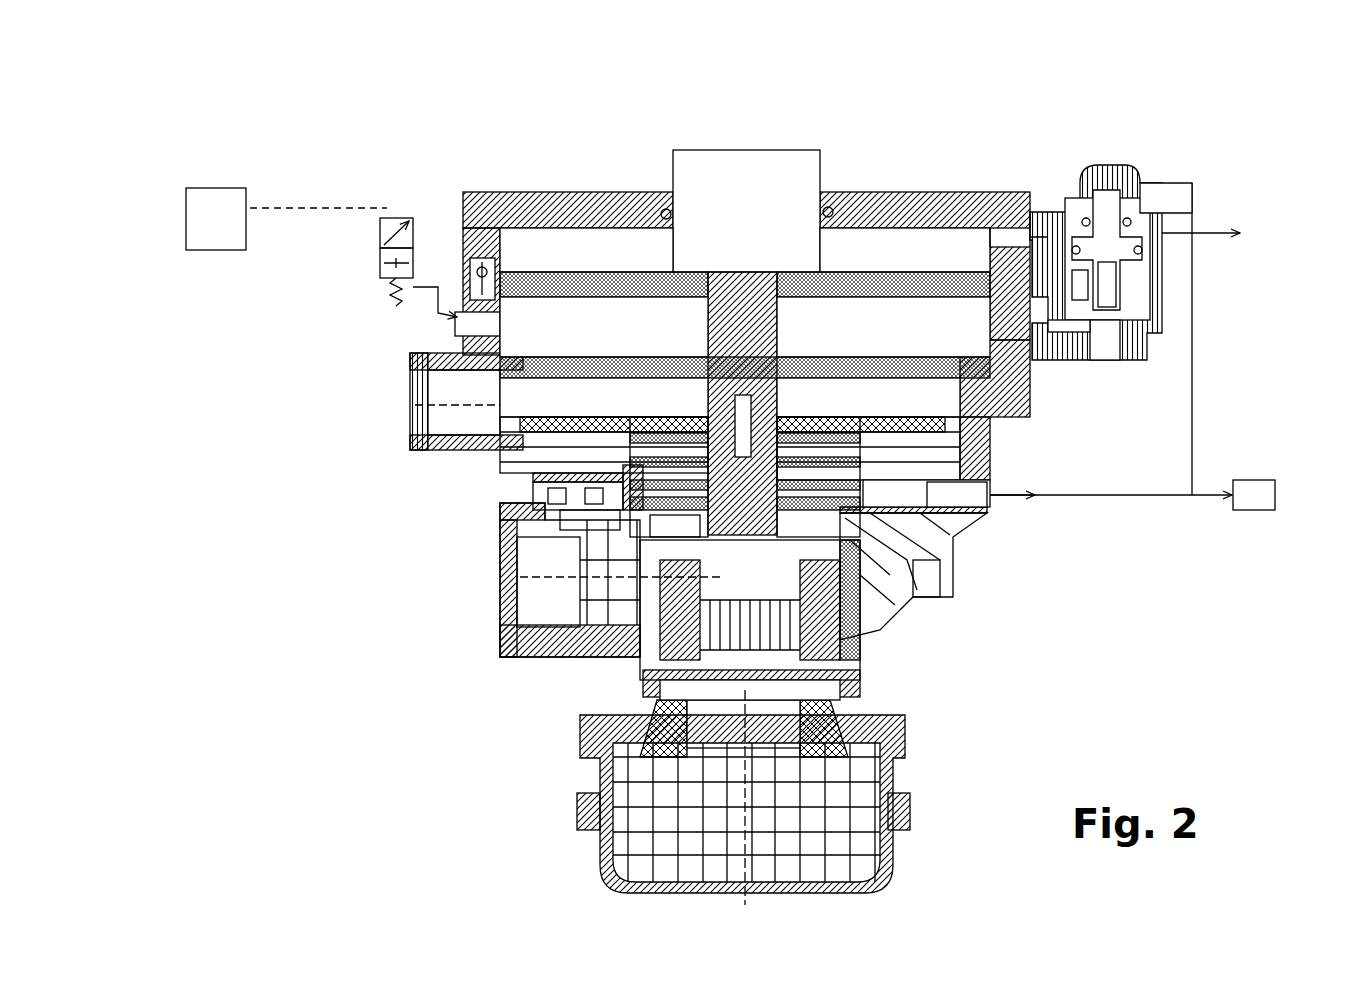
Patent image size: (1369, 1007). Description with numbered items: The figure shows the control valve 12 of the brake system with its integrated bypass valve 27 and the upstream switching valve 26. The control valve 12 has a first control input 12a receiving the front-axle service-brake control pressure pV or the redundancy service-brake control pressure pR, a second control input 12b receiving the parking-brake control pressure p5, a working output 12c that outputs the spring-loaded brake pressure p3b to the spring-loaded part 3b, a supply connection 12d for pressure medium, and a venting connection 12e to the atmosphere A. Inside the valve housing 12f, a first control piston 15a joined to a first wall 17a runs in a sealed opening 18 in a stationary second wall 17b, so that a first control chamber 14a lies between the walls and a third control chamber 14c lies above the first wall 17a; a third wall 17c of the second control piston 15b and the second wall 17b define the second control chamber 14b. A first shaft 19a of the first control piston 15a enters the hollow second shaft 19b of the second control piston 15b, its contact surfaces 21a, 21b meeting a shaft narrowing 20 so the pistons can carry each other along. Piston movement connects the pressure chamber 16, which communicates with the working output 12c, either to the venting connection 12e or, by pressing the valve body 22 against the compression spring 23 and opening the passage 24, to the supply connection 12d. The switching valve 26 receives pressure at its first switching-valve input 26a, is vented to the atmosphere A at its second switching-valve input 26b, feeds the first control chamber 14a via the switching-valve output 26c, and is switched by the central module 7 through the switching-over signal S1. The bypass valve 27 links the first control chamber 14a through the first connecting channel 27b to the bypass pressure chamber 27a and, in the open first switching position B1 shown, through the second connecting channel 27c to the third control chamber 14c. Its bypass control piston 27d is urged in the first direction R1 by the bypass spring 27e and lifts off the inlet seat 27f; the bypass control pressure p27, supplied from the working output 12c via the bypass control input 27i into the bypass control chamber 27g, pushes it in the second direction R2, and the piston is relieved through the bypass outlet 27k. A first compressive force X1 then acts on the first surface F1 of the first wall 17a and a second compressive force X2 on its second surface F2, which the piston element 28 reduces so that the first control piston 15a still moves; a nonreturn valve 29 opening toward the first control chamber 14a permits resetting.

The central module 7 is at (227, 234).
The control valve 12 is at (516, 770).
The first control input 12a is at (452, 318).
The second control input 12b is at (412, 385).
The working output 12c is at (985, 515).
The supply connection 12d is at (500, 625).
The venting connection 12e is at (740, 733).
The valve housing 12f is at (612, 205).
The first control chamber 14a is at (568, 341).
The second control chamber 14b is at (633, 411).
The third control chamber 14c is at (603, 268).
The first control piston 15a is at (780, 330).
The second control piston 15b is at (788, 430).
The pressure chamber 16 is at (560, 485).
The first wall 17a is at (672, 300).
The second wall 17b is at (920, 338).
The third wall 17c is at (540, 378).
The opening 18 is at (710, 380).
The first shaft 19a is at (590, 520).
The second shaft 19b is at (590, 485).
The shaft narrowing 20 is at (660, 490).
The first upper contact surface 21a is at (907, 597).
The second lower contact surface 21b is at (860, 695).
The valve body 22 is at (648, 640).
The compression spring 23 is at (790, 560).
The passage 24 is at (845, 585).
The switching valve 26 is at (385, 218).
The first switching-valve input 26a is at (400, 295).
The second switching-valve input 26b is at (380, 270).
The switching-valve output 26c is at (413, 250).
The bypass valve 27 is at (1058, 178).
The bypass pressure chamber 27a is at (1100, 340).
The first connecting channel 27b is at (991, 470).
The second connecting channel 27c is at (1000, 240).
The bypass control piston 27d is at (1112, 268).
The bypass spring 27e is at (1130, 280).
The inlet seat 27f is at (1128, 325).
The bypass control chamber 27g is at (1097, 185).
The bypass control input 27i is at (1145, 183).
The bypass outlet 27k is at (1162, 233).
The piston element 28 is at (760, 236).
The nonreturn valve 29 is at (480, 275).
The spring-loaded part 3b is at (1255, 495).
The atmosphere A is at (930, 880).
The first switching position B1 is at (1085, 175).
The first surface F1 is at (615, 300).
The second surface F2 is at (840, 193).
The first direction R1 is at (918, 28).
The second direction R2 is at (842, 28).
The switching-over signal S1 is at (290, 208).
The first compressive force X1 is at (898, 300).
The second compressive force X2 is at (532, 270).
The bypass control pressure p27 is at (1183, 182).
The spring-loaded brake pressure p3b is at (1025, 505).
The parking-brake control pressure p5 is at (408, 408).
The redundancy service-brake control pressure pR is at (380, 303).
The front-axle service-brake control pressure pV is at (353, 287).